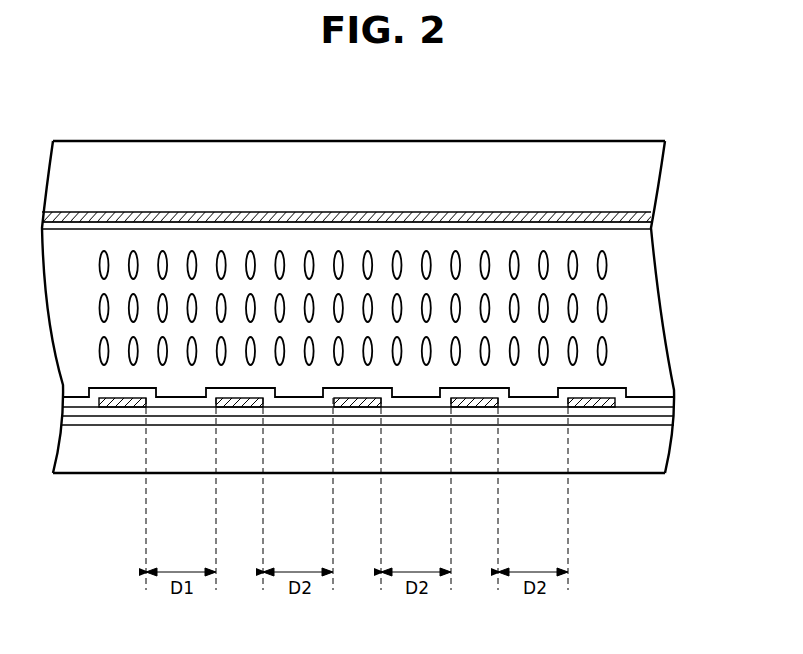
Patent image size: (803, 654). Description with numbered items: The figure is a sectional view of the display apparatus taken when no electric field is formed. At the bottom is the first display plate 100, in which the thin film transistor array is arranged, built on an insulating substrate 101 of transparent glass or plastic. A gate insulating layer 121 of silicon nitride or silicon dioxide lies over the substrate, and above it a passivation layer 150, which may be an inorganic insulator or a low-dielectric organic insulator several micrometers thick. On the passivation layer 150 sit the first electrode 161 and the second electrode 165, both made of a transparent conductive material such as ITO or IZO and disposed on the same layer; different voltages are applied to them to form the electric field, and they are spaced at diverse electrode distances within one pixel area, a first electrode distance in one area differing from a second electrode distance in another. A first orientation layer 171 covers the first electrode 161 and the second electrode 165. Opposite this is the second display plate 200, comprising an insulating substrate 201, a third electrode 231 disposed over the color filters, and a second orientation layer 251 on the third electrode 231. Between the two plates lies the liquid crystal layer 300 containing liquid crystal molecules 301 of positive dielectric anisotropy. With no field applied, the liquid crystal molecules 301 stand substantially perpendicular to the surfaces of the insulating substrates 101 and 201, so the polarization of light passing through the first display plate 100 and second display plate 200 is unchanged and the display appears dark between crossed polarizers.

The first display plate 100 is at (391, 462).
The insulating substrate 101 is at (535, 463).
The gate insulating layer 121 is at (420, 422).
The passivation layer 150 is at (300, 410).
The first electrode 161 is at (238, 403).
The second electrode 165 is at (118, 402).
The first orientation layer 171 is at (178, 400).
The second display plate 200 is at (385, 155).
The insulating substrate 201 is at (386, 153).
The third electrode 231 is at (312, 213).
The second orientation layer 251 is at (238, 227).
The liquid crystal layer 300 is at (415, 312).
The liquid crystal molecules 301 is at (381, 313).